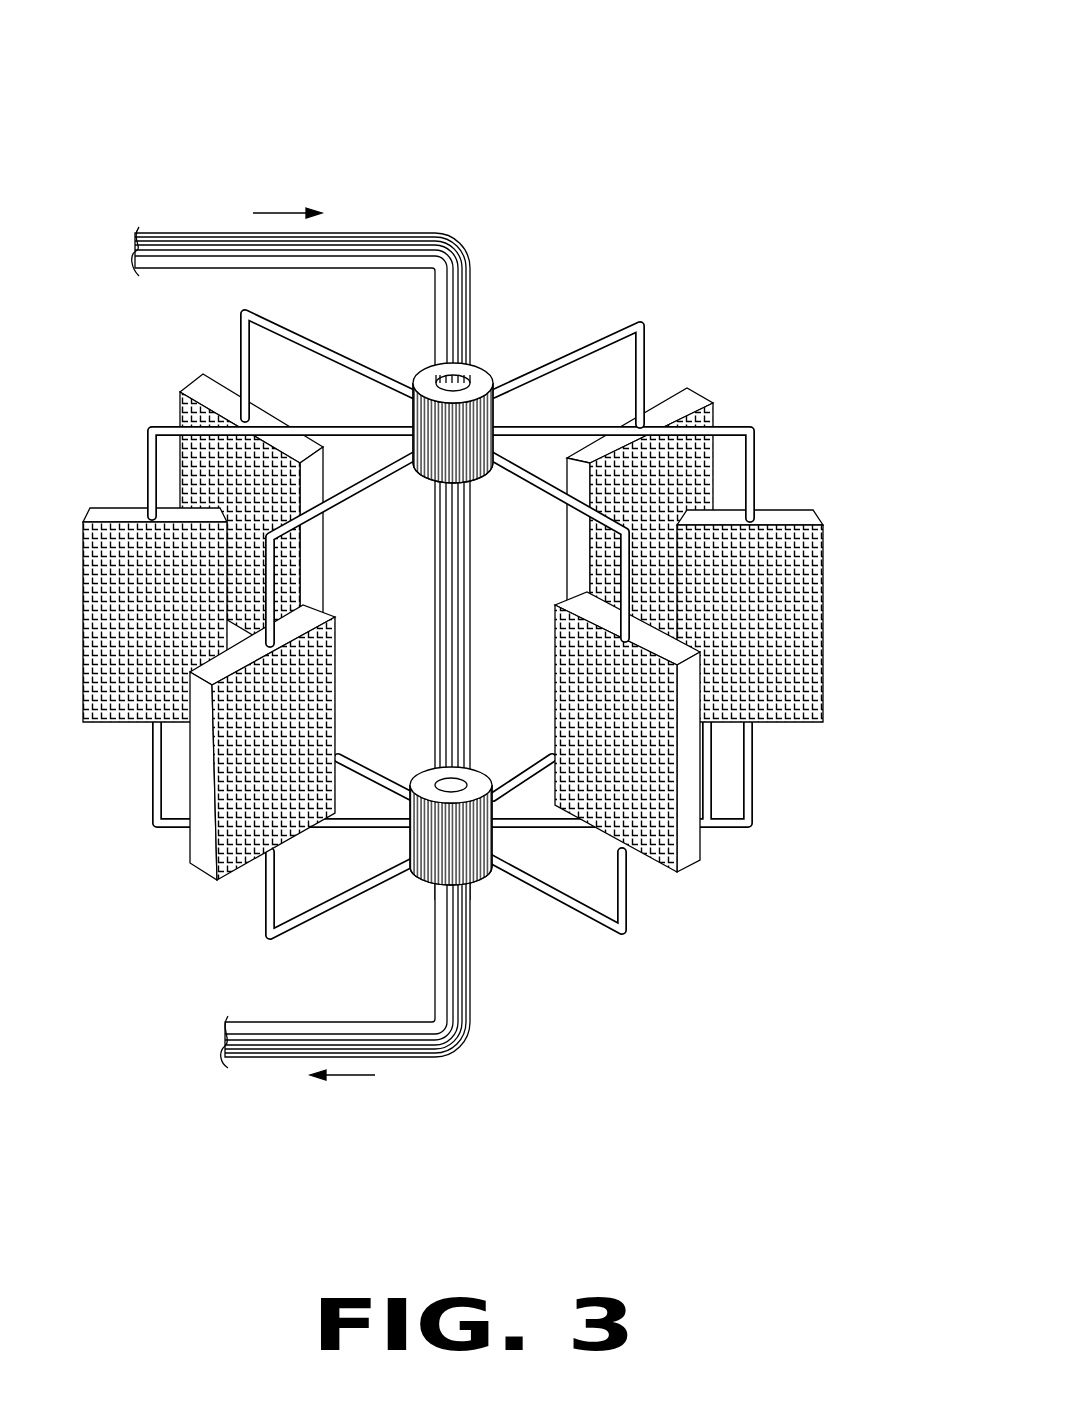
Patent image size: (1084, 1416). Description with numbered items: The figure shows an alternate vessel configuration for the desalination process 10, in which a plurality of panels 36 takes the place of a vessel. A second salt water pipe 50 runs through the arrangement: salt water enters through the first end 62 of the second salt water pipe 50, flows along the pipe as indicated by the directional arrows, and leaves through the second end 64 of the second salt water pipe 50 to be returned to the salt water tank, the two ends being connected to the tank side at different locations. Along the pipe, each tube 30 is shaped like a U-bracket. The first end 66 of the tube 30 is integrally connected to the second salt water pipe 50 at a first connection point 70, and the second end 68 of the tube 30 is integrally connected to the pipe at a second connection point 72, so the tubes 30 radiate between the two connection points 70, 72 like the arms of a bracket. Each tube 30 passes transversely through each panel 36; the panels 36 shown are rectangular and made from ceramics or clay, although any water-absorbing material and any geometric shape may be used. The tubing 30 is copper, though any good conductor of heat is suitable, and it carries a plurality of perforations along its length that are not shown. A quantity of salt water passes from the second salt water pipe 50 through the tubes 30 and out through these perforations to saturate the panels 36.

The desalination process 10 is at (446, 604).
The tube 30 is at (636, 372).
The panel 36 is at (690, 862).
The second salt water pipe 50 is at (397, 240).
The first end 62 is at (163, 243).
The second end 64 is at (263, 1057).
The first end 66 is at (410, 393).
The second end 68 is at (412, 792).
The first connection point 70 is at (479, 385).
The second connection point 72 is at (476, 886).